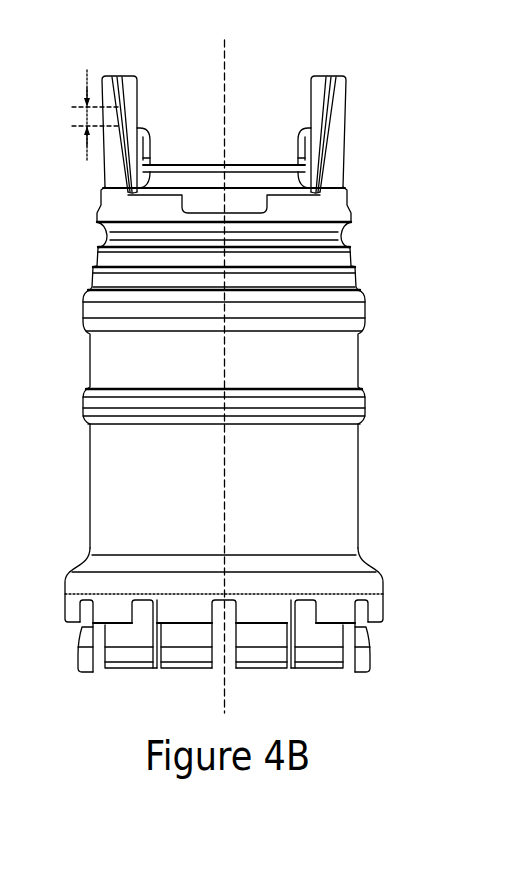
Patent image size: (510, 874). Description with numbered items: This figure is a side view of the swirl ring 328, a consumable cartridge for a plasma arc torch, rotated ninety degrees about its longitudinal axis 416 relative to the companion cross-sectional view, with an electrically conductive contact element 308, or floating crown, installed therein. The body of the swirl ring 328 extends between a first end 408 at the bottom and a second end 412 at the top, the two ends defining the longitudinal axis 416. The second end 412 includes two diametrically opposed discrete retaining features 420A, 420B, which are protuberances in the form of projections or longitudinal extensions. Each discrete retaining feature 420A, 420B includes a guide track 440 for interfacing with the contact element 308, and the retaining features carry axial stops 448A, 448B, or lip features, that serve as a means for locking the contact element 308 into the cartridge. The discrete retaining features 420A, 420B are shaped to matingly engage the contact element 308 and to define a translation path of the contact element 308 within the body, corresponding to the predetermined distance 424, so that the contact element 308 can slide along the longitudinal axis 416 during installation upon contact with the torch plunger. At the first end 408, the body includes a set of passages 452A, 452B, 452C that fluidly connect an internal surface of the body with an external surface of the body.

The second end 412 is at (76, 91).
The predetermined distance 424 is at (78, 114).
The axial stop 448A is at (128, 80).
The axial stop 448B is at (318, 82).
The longitudinal axis 416 is at (233, 90).
The guide track 440 is at (138, 116).
The discrete retaining feature 420A is at (100, 167).
The discrete retaining feature 420B is at (350, 100).
The contact element 308 is at (240, 165).
The swirl ring 328 is at (360, 378).
The first end 408 is at (93, 686).
The passage 452A is at (158, 664).
The passage 452B is at (233, 668).
The passage 452C is at (298, 656).